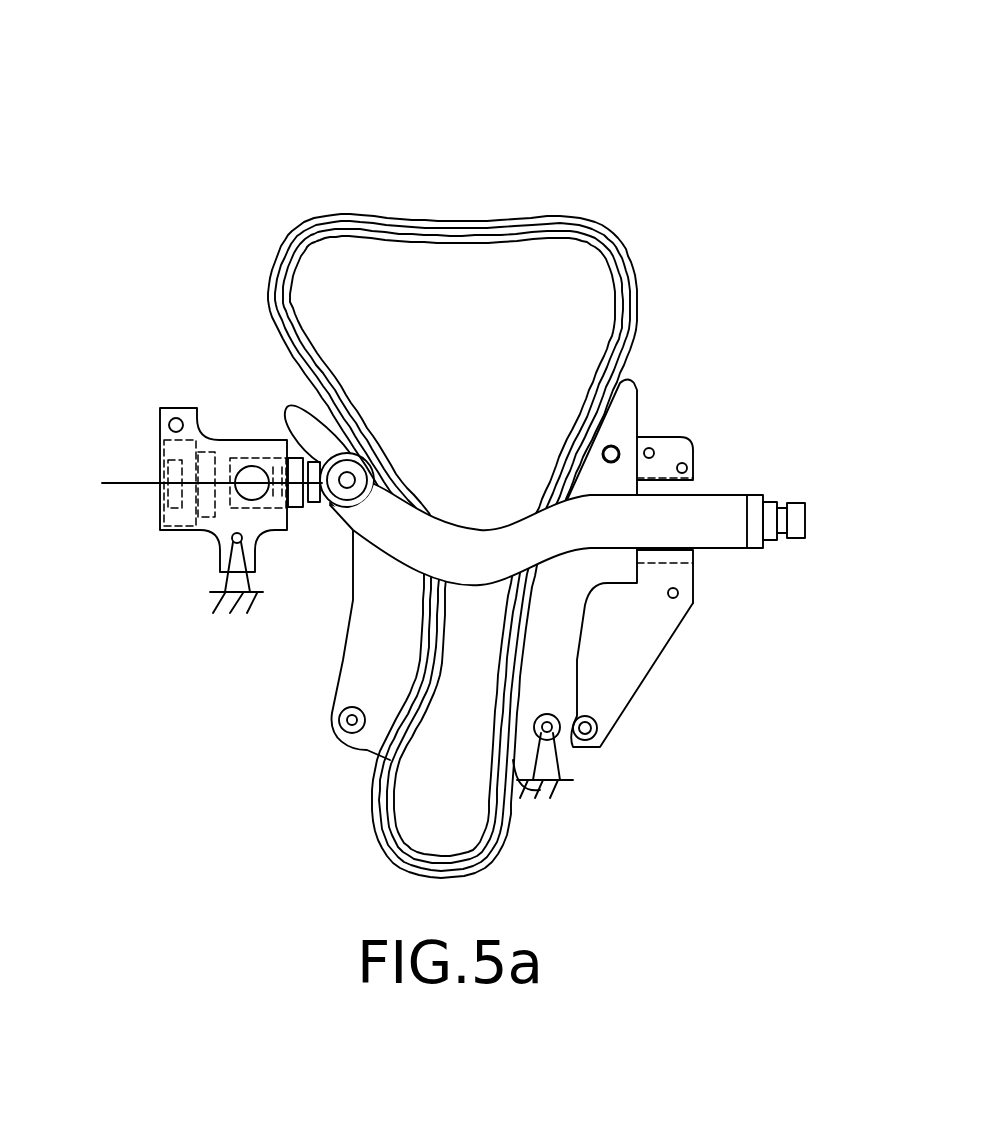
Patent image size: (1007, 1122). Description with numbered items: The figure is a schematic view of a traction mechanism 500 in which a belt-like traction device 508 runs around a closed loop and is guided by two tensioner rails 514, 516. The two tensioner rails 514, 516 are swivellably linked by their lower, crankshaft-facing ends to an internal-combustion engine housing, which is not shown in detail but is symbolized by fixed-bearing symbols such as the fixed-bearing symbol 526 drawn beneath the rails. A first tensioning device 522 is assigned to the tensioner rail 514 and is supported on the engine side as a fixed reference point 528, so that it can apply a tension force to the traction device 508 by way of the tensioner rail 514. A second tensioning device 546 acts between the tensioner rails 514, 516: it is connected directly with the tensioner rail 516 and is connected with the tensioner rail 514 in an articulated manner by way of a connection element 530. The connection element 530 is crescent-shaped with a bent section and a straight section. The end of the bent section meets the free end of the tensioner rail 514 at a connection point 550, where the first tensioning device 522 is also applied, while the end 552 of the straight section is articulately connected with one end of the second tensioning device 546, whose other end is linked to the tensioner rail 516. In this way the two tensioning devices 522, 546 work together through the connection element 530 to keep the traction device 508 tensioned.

The traction mechanism 500 is at (605, 197).
The traction device 508 is at (402, 232).
The tensioner rail 514 is at (377, 645).
The tensioner rail 516 is at (567, 630).
The first tensioning device 522 is at (177, 425).
The fixed-bearing symbol 526 is at (560, 792).
The fixed reference point 528 is at (210, 602).
The connection element 530 is at (680, 517).
The second tensioning device 546 is at (773, 517).
The connection point 550 is at (347, 480).
The end of the straight section 552 is at (725, 530).